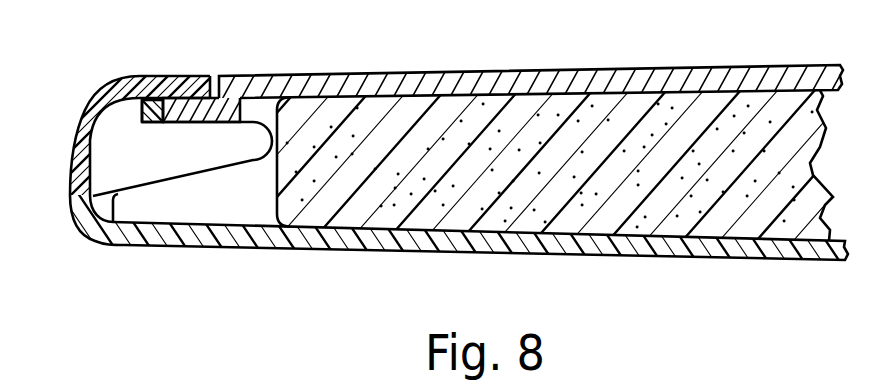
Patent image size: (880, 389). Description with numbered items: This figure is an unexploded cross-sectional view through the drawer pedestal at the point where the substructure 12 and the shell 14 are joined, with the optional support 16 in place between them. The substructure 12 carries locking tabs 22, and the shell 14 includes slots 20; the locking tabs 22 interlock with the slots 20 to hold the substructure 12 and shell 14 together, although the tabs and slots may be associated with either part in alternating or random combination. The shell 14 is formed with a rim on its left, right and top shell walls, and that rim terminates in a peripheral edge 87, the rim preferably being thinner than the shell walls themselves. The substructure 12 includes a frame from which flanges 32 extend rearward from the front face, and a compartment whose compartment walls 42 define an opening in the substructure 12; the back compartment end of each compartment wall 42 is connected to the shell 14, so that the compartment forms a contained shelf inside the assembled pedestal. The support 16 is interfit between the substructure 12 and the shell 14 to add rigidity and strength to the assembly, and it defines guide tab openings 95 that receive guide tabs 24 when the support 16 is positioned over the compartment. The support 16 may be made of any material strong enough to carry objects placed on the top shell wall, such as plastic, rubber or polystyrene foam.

The substructure 12 is at (70, 172).
The shell 14 is at (490, 72).
The support 16 is at (733, 193).
The slots 20 is at (177, 112).
The locking tabs 22 is at (180, 115).
The guide tabs 24 is at (132, 160).
The flanges 32 is at (113, 90).
The compartment walls 42 is at (498, 252).
The peripheral edge 87 is at (143, 106).
The guide tab openings 95 is at (257, 188).